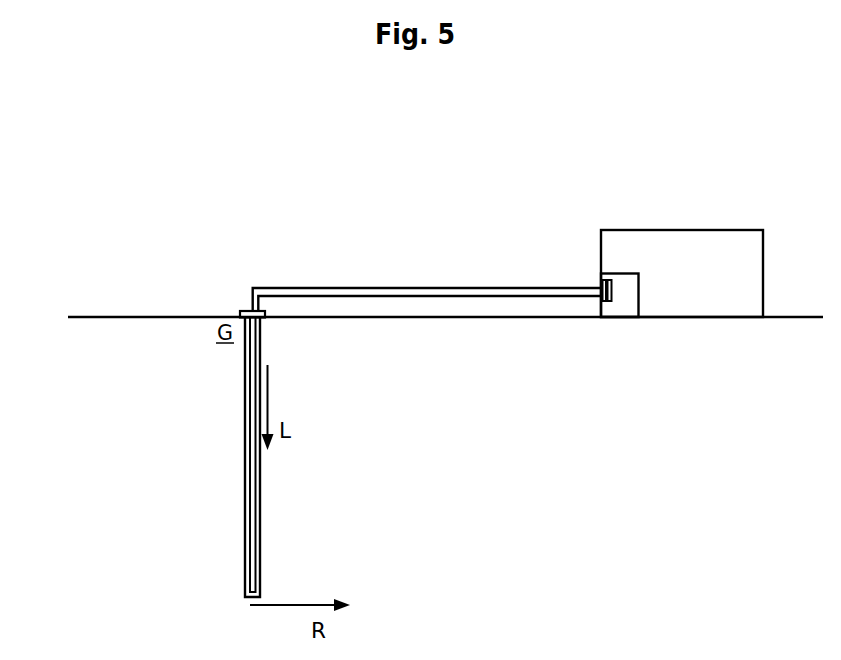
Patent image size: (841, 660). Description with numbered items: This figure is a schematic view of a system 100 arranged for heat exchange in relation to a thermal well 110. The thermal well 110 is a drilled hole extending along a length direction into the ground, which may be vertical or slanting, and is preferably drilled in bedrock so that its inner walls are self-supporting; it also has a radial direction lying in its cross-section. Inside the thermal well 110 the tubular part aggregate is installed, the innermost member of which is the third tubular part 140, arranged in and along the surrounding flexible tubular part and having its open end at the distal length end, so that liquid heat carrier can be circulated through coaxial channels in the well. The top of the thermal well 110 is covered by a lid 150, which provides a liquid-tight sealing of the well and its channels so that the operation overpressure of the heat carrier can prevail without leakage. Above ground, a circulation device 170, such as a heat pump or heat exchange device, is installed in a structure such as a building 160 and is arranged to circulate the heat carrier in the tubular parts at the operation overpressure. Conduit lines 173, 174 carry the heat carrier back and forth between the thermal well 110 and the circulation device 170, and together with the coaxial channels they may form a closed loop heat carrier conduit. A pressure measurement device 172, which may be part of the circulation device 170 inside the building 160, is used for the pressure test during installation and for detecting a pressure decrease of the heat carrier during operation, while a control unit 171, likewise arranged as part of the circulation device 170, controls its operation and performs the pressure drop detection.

The system 100 is at (222, 225).
The thermal well 110 is at (245, 418).
The third tubular part 140 is at (245, 511).
The lid 150 is at (247, 312).
The building 160 is at (753, 266).
The circulation device 170 is at (639, 292).
The control unit 171 is at (613, 301).
The pressure measurement device 172 is at (605, 301).
The conduit line 173 is at (453, 295).
The conduit line 174 is at (520, 288).